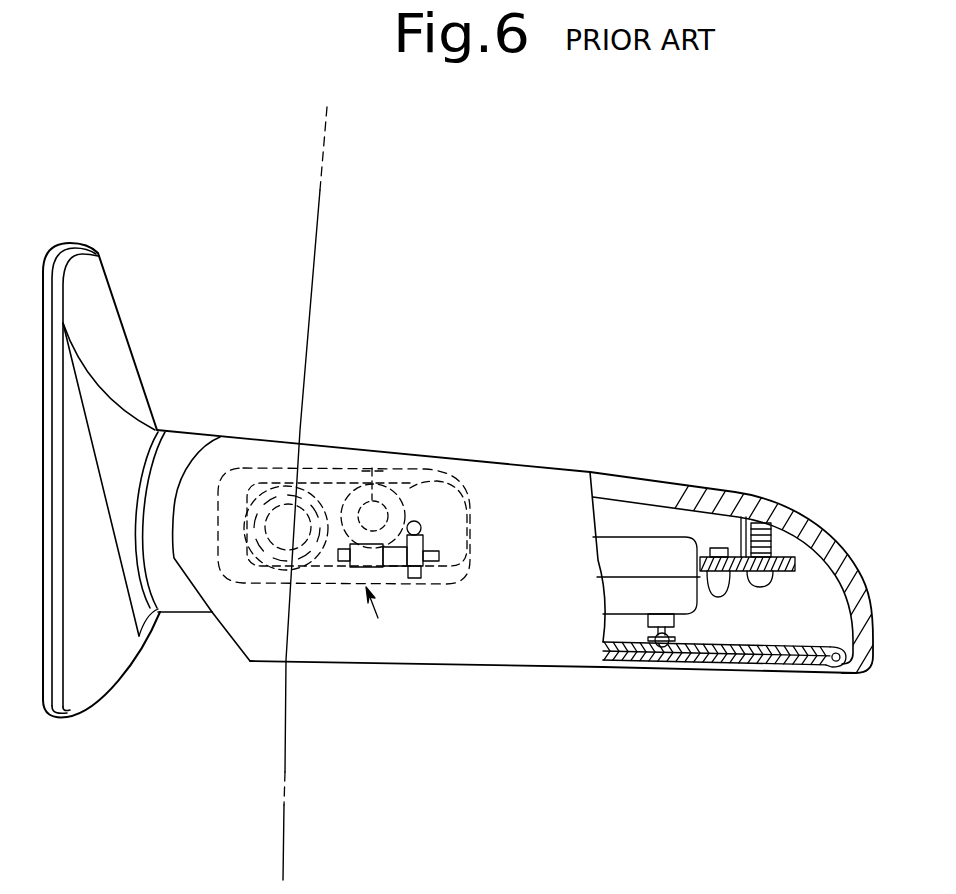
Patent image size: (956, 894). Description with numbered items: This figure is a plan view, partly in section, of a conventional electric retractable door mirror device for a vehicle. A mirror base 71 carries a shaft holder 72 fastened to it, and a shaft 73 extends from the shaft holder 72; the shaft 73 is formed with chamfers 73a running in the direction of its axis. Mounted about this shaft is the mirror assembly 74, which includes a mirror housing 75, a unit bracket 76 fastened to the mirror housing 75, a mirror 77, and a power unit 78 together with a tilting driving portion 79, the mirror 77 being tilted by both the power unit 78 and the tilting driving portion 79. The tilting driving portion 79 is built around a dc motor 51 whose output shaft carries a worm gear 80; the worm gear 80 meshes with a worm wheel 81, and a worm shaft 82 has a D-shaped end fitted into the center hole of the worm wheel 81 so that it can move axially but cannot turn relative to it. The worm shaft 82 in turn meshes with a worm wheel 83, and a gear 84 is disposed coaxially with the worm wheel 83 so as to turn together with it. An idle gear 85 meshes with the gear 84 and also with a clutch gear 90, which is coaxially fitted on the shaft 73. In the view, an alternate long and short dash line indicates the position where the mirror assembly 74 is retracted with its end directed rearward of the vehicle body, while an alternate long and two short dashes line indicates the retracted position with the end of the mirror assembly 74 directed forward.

The dc motor 51 is at (472, 490).
The mirror base 71 is at (97, 253).
The shaft holder 72 is at (192, 567).
The shaft 73 is at (297, 592).
The chamfer 73a is at (250, 468).
The mirror assembly 74 is at (323, 152).
The mirror housing 75 is at (705, 495).
The unit bracket 76 is at (797, 565).
The mirror 77 is at (705, 658).
The power unit 78 is at (663, 552).
The tilting driving portion 79 is at (378, 618).
The worm gear 80 is at (447, 477).
The worm wheel 81 is at (433, 590).
The worm shaft 82 is at (387, 590).
The worm wheel 83 is at (400, 480).
The gear 84 is at (373, 466).
The idle gear 85 is at (324, 466).
The clutch gear 90 is at (233, 585).